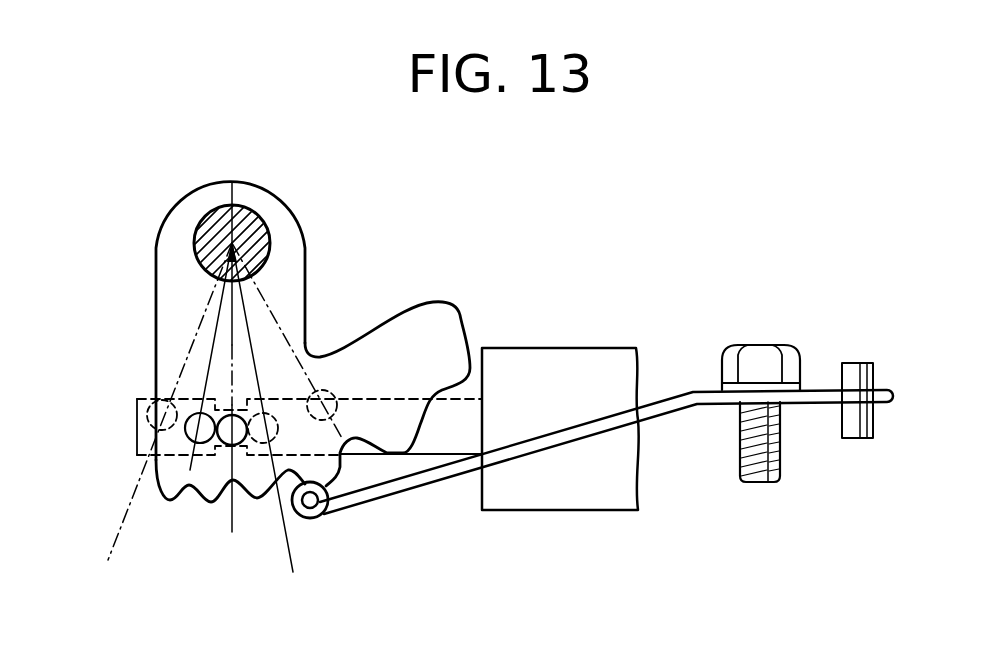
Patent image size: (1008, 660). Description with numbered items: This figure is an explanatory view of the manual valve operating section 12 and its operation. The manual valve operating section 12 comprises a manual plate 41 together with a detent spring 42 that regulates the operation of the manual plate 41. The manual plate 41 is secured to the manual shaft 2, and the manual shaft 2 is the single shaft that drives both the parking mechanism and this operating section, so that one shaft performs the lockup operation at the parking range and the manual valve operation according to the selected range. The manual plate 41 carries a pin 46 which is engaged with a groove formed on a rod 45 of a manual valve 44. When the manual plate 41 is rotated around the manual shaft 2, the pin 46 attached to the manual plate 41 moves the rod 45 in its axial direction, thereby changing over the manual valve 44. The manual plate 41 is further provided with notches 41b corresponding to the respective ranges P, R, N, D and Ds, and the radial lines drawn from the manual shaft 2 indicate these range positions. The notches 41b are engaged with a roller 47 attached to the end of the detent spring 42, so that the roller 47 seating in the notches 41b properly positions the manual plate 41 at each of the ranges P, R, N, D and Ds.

The manual shaft 2 is at (215, 218).
The manual valve operating section 12 is at (508, 267).
The manual plate 41 is at (180, 312).
The notches 41b is at (243, 505).
The detent spring 42 is at (542, 445).
The manual valve 44 is at (591, 370).
The rod 45 is at (442, 433).
The pin 46 is at (216, 428).
The roller 47 is at (312, 510).
The parking range P is at (349, 447).
The reverse range R is at (287, 428).
The neutral range N is at (232, 532).
The drive range D is at (190, 470).
The Ds range Ds is at (162, 422).